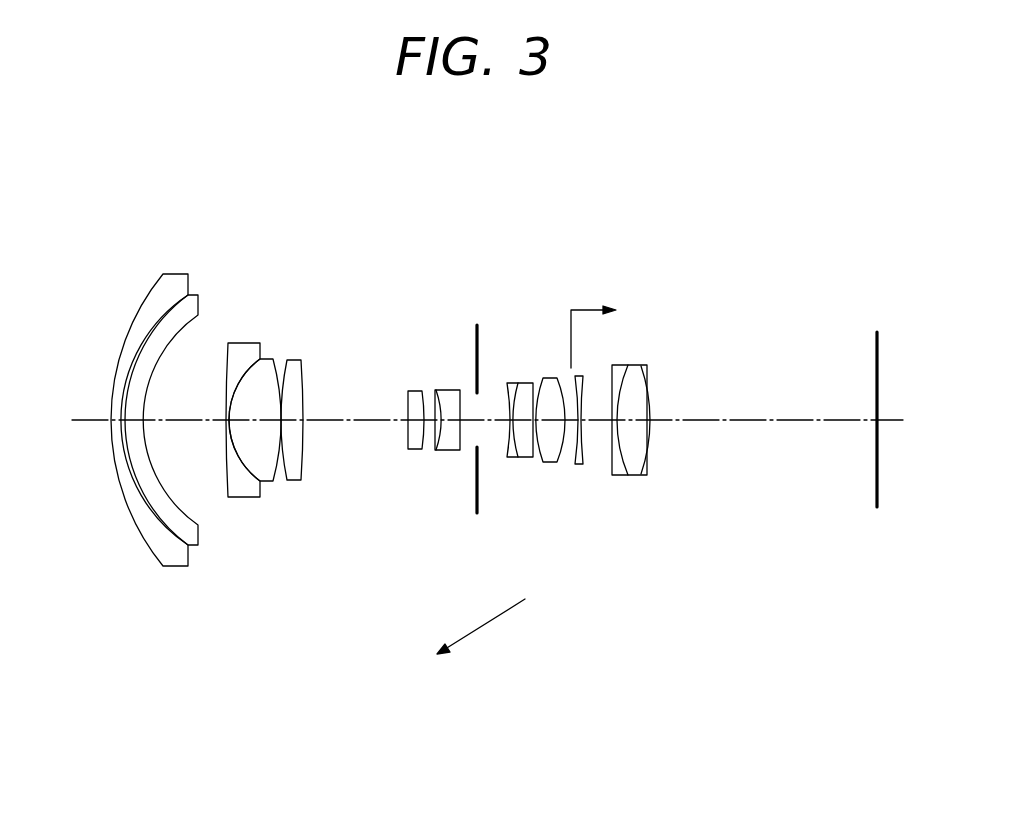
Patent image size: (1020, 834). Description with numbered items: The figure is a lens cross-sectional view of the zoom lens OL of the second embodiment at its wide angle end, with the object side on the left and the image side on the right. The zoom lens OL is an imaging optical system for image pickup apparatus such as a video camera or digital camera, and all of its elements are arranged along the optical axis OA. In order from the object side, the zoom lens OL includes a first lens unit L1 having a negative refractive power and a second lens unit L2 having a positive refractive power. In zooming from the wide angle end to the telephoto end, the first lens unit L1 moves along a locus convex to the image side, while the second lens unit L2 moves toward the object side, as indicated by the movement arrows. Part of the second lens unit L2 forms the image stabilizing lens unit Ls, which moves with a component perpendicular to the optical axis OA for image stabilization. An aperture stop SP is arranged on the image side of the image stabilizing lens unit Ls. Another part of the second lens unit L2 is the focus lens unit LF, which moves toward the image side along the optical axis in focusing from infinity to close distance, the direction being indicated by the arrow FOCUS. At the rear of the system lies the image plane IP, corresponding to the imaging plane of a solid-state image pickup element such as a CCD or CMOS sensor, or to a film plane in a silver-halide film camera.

The zoom lens OL is at (690, 185).
The first lens unit L1 is at (305, 595).
The second lens unit L2 is at (517, 462).
The image stabilizing lens unit Ls is at (430, 357).
The focus lens unit LF is at (580, 446).
The aperture stop SP is at (477, 327).
The image plane IP is at (876, 333).
The optical axis OA is at (470, 422).
The focus arrow FOCUS is at (612, 322).